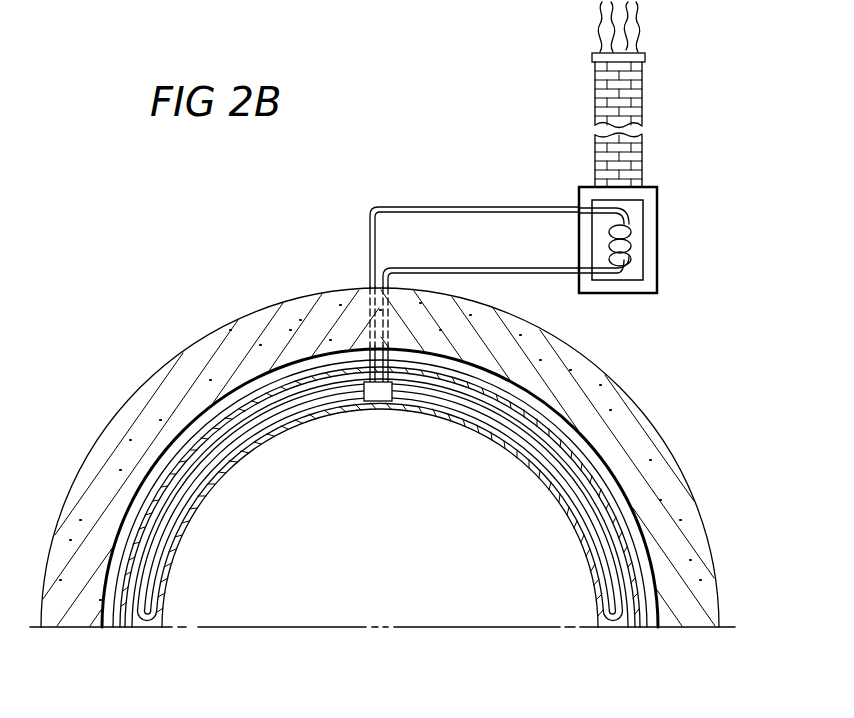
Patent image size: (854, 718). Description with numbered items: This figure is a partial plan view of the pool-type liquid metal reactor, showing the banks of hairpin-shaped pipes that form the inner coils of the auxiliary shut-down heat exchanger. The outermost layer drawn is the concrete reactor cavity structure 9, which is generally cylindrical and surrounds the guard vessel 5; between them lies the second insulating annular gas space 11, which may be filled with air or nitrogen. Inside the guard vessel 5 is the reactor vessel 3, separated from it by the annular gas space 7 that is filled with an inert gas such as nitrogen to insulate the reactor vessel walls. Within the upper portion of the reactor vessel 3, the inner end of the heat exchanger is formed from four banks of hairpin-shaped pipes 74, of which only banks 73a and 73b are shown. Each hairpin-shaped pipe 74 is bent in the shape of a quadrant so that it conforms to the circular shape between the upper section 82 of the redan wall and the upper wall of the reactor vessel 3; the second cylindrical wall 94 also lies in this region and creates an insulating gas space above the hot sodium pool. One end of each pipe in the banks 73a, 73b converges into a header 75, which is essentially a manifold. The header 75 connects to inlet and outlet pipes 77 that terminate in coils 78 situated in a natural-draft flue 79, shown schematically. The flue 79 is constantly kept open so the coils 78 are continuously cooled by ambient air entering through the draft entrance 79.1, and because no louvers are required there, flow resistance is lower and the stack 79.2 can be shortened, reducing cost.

The reactor vessel 3 is at (124, 628).
The guard vessel 5 is at (128, 510).
The annular gas space 7 is at (192, 462).
The reactor cavity structure 9 is at (108, 455).
The second insulating annular gas space 11 is at (156, 470).
The bank of hairpin-shaped pipes 73a is at (262, 425).
The bank of hairpin-shaped pipes 73b is at (592, 530).
The hairpin-shaped pipes 74 is at (236, 440).
The header 75 is at (379, 402).
The inlet and outlet pipes 77 is at (395, 266).
The coils 78 is at (628, 229).
The natural-draft flues 79 is at (666, 265).
The draft entrances 79.1 is at (632, 277).
The stacks 79.2 is at (642, 98).
The upper section 82 is at (173, 562).
The second cylindrical wall 94 is at (133, 628).